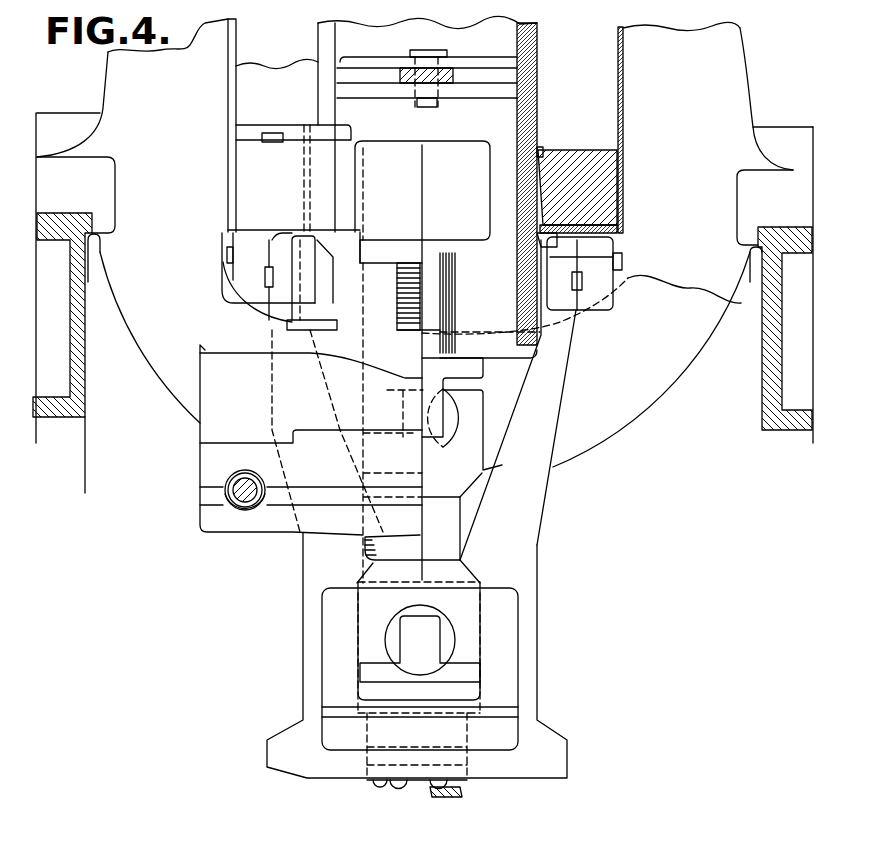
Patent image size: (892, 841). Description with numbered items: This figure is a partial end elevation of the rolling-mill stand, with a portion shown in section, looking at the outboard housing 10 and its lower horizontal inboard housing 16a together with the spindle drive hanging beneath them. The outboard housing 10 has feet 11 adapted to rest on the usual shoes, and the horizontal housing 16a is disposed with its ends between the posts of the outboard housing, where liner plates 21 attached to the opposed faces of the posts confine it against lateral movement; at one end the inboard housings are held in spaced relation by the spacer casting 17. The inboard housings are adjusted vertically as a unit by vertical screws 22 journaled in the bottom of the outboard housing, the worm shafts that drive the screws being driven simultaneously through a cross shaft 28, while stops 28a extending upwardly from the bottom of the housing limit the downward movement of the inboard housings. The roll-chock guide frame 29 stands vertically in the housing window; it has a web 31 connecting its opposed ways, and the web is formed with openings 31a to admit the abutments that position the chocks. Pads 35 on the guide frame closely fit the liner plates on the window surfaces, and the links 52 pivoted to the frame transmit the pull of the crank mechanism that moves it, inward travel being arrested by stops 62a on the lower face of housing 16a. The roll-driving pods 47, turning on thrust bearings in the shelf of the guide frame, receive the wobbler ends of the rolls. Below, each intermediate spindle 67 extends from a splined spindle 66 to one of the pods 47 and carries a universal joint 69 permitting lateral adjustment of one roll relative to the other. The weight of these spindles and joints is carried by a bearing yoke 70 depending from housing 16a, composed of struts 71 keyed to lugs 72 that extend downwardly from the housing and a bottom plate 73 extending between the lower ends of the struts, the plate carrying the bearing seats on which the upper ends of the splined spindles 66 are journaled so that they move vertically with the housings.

The outboard housing 10 is at (106, 73).
The feet 11 is at (108, 177).
The inboard housing 16a is at (292, 181).
The spacer casting 17 is at (267, 77).
The liner plates 21 is at (560, 140).
The vertical screws 22 is at (397, 288).
The cross shaft 28 is at (236, 482).
The stops 28a is at (290, 312).
The roll-chock guide frame 29 is at (540, 78).
The web 31 is at (480, 38).
The openings 31a is at (443, 140).
The pads 35 is at (558, 147).
The roll-driving pods 47 is at (477, 373).
The links 52 is at (445, 84).
The stops 62a is at (615, 228).
The splined spindle 66 is at (445, 797).
The intermediate spindle 67 is at (453, 513).
The universal joint 69 is at (473, 408).
The bearing yoke 70 is at (556, 477).
The struts 71 is at (278, 390).
The lugs 72 is at (245, 280).
The bottom plate 73 is at (560, 752).